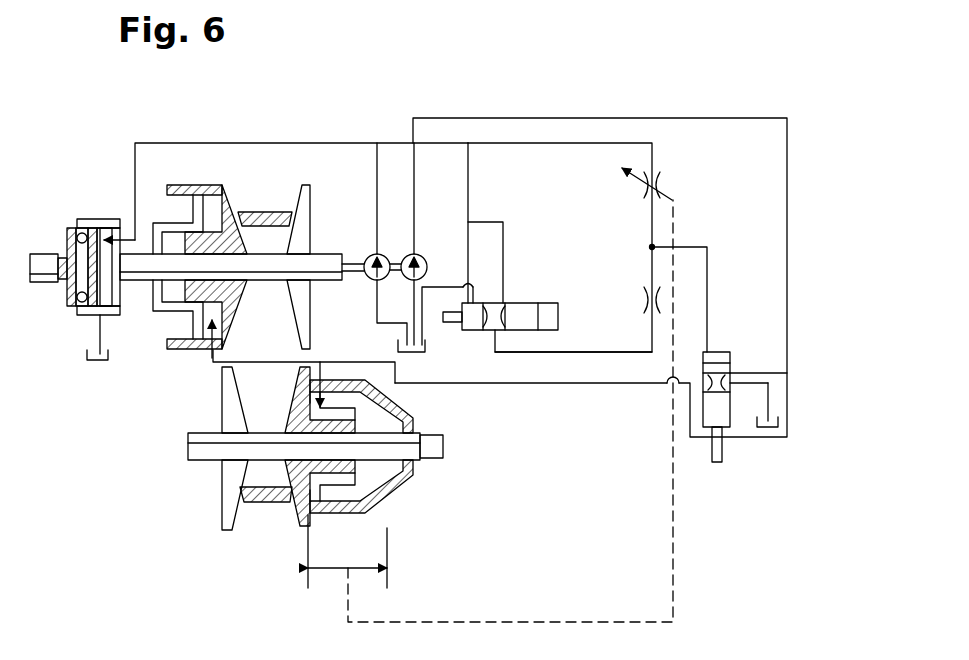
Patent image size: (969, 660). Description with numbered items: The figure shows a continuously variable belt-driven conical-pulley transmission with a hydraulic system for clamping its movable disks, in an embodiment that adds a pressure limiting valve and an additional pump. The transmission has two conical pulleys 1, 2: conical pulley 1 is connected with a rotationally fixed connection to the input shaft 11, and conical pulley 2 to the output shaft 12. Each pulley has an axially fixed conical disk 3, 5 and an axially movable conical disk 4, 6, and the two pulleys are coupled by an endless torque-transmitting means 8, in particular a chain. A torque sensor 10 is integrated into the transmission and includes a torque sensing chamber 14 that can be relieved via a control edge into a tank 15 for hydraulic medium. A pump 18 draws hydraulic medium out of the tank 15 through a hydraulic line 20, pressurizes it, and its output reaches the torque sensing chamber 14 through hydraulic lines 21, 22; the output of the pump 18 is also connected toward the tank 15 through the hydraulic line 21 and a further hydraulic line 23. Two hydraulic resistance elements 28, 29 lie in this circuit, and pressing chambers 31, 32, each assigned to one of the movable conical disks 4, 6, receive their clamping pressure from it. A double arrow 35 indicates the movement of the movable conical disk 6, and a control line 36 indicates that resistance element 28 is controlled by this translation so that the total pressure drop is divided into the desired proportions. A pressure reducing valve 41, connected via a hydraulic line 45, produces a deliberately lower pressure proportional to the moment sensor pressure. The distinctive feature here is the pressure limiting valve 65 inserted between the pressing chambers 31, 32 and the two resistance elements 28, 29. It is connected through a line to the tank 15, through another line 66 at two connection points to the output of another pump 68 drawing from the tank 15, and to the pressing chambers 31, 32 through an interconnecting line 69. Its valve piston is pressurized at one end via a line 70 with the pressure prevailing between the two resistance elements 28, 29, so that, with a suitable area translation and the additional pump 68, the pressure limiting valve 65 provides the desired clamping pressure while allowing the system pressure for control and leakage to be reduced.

The conical pulley 1 is at (324, 189).
The conical pulley 2 is at (210, 548).
The axially fixed conical disk 3 is at (312, 207).
The axially movable conical disk 4 is at (232, 192).
The axially fixed conical disk 5 is at (228, 485).
The axially movable conical disk 6 is at (295, 516).
The endless torque-transmitting means 8 is at (264, 504).
The torque sensor 10 is at (89, 219).
The input shaft 11 is at (41, 273).
The output shaft 12 is at (443, 447).
The torque sensing chamber 14 is at (106, 298).
The tank 15 is at (97, 362).
The pump 18 is at (372, 259).
The hydraulic line 20 is at (377, 318).
The hydraulic line 21 is at (377, 188).
The hydraulic line 22 is at (264, 143).
The hydraulic line 23 is at (545, 143).
The hydraulic resistance element 28 is at (661, 176).
The hydraulic resistance element 29 is at (644, 297).
The pressing chamber 31 is at (216, 312).
The pressing chamber 32 is at (305, 418).
The double arrow 35 is at (357, 568).
The control line 36 is at (510, 620).
The pressure reducing valve 41 is at (542, 296).
The hydraulic line 45 is at (592, 354).
The pressure limiting valve 65 is at (734, 342).
The line 66 is at (788, 232).
The pump 68 is at (422, 260).
The interconnecting line 69 is at (545, 386).
The line 70 is at (709, 261).